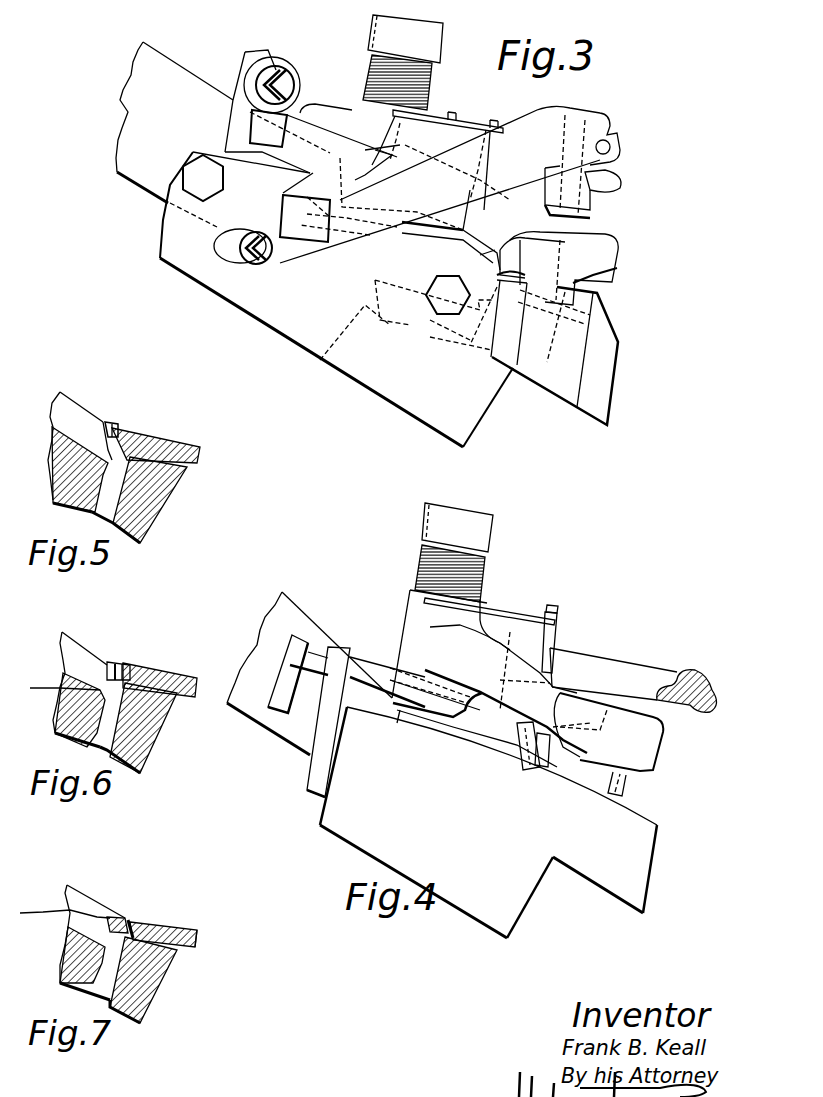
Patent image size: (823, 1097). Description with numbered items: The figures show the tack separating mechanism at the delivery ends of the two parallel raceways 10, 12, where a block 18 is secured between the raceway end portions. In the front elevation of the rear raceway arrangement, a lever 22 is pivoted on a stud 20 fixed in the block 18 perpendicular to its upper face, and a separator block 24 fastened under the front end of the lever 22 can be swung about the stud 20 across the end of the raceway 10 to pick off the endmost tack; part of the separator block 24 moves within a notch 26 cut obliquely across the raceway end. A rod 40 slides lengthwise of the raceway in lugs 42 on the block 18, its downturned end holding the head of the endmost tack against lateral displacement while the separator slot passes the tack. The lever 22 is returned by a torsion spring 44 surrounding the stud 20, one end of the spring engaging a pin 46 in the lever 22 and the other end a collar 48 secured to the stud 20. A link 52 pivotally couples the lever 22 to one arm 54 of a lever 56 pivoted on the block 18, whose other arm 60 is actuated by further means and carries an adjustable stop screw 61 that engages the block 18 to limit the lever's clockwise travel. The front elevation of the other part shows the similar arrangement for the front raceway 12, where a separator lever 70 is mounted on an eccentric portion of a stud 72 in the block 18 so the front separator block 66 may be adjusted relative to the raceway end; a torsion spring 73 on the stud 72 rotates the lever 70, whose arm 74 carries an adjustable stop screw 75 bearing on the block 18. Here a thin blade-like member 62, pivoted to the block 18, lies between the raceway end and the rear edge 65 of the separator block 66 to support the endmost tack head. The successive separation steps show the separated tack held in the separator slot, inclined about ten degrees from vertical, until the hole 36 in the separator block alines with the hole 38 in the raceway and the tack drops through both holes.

In FIG. 4, the rear raceway 10 is at (308, 615).
In FIG. 3, the front raceway 12 is at (178, 73).
In FIG. 5, the front raceway 12 is at (72, 408).
In FIG. 6, the front raceway 12 is at (72, 648).
In FIG. 7, the front raceway 12 is at (75, 900).
In FIG. 3, the block 18 is at (178, 268).
In FIG. 4, the block 18 is at (538, 872).
In FIG. 4, the stud 20 is at (476, 555).
In FIG. 4, the lever 22 is at (410, 615).
In FIG. 4, the separator block 24 is at (632, 780).
In FIG. 5, the notch 26 is at (98, 418).
In FIG. 6, the notch 26 is at (57, 688).
In FIG. 7, the notch 26 is at (61, 916).
In FIG. 6, the hole 36 is at (132, 670).
In FIG. 7, the hole 36 is at (140, 915).
In FIG. 5, the hole 38 is at (110, 483).
In FIG. 6, the hole 38 is at (102, 728).
In FIG. 7, the hole 38 is at (105, 972).
In FIG. 4, the rod 40 is at (370, 683).
In FIG. 4, the lugs 42 is at (317, 767).
In FIG. 4, the torsion spring 44 is at (482, 582).
In FIG. 4, the pin 46 is at (558, 625).
In FIG. 4, the collar 48 is at (488, 520).
In FIG. 3, the link 52 is at (620, 183).
In FIG. 4, the link 52 is at (645, 668).
In FIG. 3, the arm 54 is at (548, 125).
In FIG. 3, the lever 56 is at (460, 135).
In FIG. 3, the arm 60 is at (300, 255).
In FIG. 3, the stop screw 61 is at (270, 262).
In FIG. 3, the blade-like member 62 is at (515, 238).
In FIG. 6, the rear edge 65 is at (100, 655).
In FIG. 7, the rear edge 65 is at (118, 915).
In FIG. 5, the separator block 66 is at (180, 440).
In FIG. 6, the separator block 66 is at (172, 675).
In FIG. 7, the separator block 66 is at (200, 932).
In FIG. 3, the separator lever 70 is at (610, 260).
In FIG. 3, the stud 72 is at (420, 58).
In FIG. 3, the torsion spring 73 is at (372, 72).
In FIG. 3, the arm 74 is at (317, 125).
In FIG. 3, the stop screw 75 is at (294, 86).